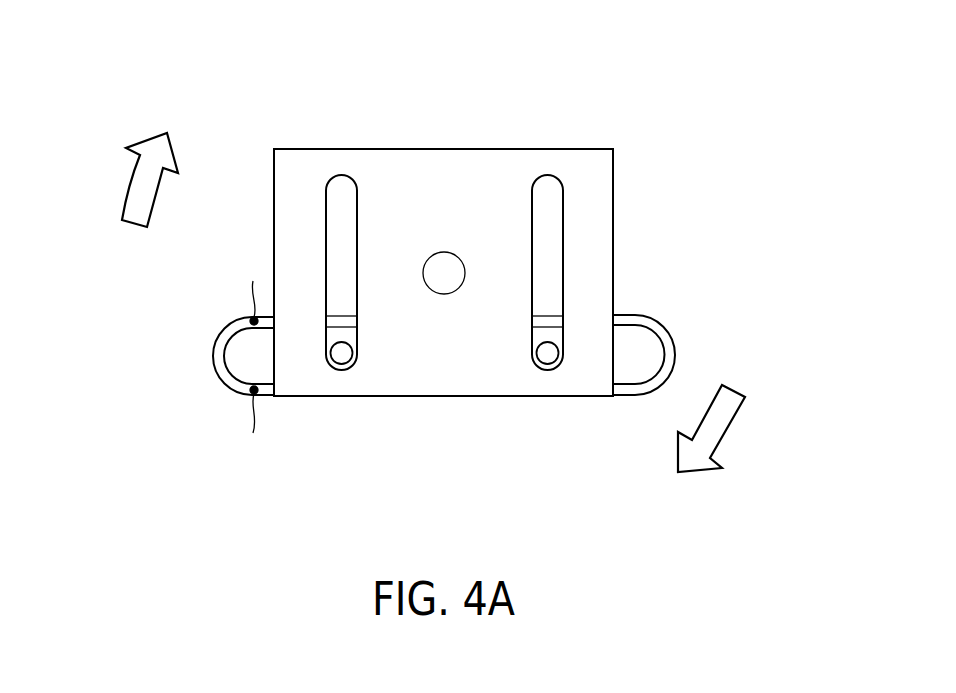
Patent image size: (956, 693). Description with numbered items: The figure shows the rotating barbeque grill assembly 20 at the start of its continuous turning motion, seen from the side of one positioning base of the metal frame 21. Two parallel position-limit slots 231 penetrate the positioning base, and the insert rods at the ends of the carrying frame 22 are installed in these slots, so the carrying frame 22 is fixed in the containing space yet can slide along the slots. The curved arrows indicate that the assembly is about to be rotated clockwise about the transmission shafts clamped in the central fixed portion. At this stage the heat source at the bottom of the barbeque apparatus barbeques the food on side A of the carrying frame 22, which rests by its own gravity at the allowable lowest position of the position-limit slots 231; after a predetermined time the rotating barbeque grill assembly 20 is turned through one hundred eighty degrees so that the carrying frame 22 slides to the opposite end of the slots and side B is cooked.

The rotating barbeque grill assembly 20 is at (638, 120).
The metal frame 21 is at (596, 173).
The carrying frame 22 is at (663, 336).
The position-limit slots 231 is at (546, 190).